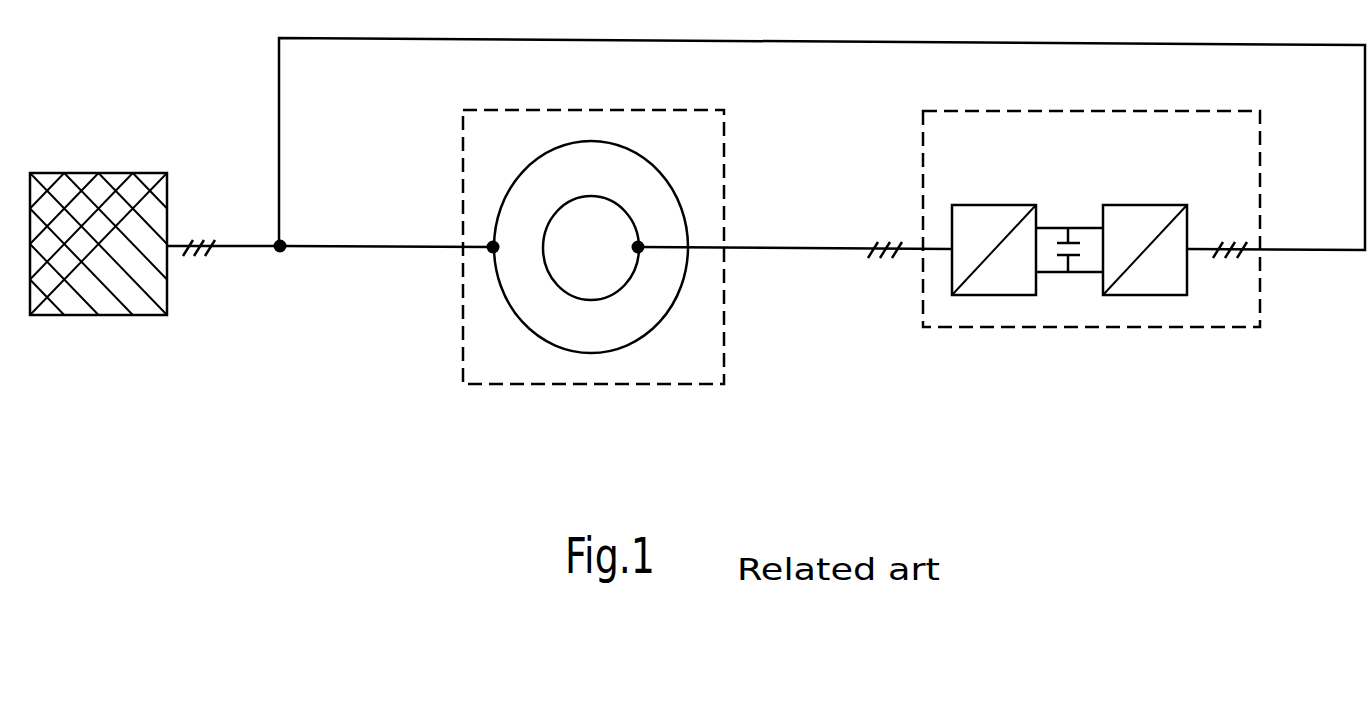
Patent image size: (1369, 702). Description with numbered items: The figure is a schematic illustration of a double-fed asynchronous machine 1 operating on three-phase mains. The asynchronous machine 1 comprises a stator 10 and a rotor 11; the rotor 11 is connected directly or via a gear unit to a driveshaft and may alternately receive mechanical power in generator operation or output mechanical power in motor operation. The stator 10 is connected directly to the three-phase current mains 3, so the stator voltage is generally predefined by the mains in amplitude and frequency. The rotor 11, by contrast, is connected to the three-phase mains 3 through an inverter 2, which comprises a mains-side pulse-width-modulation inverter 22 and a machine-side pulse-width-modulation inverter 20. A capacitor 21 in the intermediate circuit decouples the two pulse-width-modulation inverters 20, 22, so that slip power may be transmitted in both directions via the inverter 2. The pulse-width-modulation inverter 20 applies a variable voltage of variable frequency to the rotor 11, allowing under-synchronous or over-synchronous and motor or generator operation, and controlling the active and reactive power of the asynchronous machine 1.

The asynchronous machine 1 is at (628, 230).
The inverter 2 is at (1129, 209).
The three-phase current mains 3 is at (167, 190).
The stator 10 is at (682, 208).
The rotor 11 is at (623, 208).
The machine-side pulse-width-modulation inverter 20 is at (997, 205).
The capacitor 21 is at (1070, 238).
The mains-side pulse-width-modulation inverter 22 is at (1157, 205).